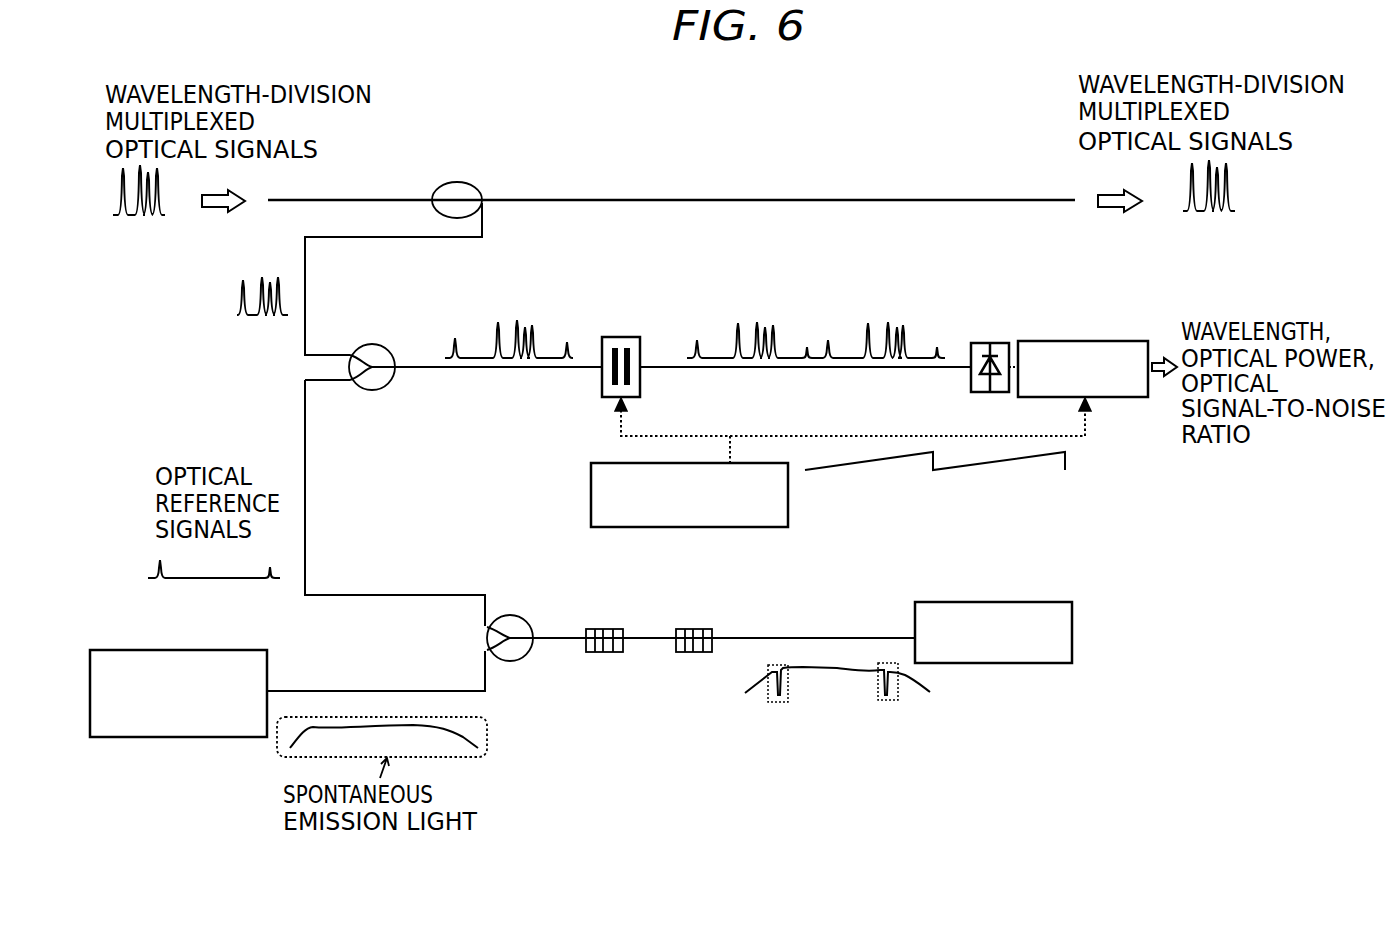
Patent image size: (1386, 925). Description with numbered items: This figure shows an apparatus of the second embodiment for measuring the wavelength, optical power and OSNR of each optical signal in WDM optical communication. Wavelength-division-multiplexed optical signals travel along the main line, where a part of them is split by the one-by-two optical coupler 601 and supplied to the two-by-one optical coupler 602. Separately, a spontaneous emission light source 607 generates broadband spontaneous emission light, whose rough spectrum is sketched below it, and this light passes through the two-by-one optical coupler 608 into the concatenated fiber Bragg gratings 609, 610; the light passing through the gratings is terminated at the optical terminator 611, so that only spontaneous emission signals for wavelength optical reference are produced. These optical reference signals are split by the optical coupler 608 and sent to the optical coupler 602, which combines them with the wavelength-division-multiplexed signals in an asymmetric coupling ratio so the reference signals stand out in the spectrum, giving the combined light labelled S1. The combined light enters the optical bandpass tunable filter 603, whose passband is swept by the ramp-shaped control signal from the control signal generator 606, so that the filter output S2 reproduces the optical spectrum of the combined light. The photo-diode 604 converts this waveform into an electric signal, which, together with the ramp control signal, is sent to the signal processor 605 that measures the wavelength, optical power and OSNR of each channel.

The 1×2 optical coupler 601 is at (455, 202).
The 2×1 optical coupler 602 is at (383, 388).
The optical bandpass tunable filter 603 is at (618, 337).
The photo-diode 604 is at (990, 343).
The signal processor 605 is at (1080, 341).
The control signal generator 606 is at (788, 505).
The spontaneous emission light source 607 is at (202, 737).
The 2×1 optical coupler 608 is at (523, 620).
The fiber Bragg grating 609 is at (602, 655).
The fiber Bragg grating 610 is at (697, 655).
The optical terminator 611 is at (1073, 632).
The optical signal S1 is at (487, 358).
The optical signal S2 is at (790, 358).